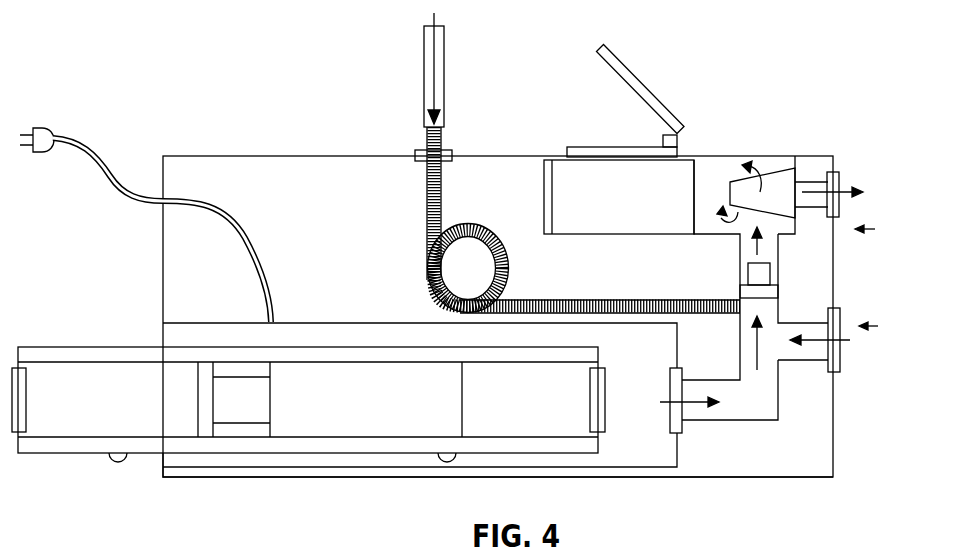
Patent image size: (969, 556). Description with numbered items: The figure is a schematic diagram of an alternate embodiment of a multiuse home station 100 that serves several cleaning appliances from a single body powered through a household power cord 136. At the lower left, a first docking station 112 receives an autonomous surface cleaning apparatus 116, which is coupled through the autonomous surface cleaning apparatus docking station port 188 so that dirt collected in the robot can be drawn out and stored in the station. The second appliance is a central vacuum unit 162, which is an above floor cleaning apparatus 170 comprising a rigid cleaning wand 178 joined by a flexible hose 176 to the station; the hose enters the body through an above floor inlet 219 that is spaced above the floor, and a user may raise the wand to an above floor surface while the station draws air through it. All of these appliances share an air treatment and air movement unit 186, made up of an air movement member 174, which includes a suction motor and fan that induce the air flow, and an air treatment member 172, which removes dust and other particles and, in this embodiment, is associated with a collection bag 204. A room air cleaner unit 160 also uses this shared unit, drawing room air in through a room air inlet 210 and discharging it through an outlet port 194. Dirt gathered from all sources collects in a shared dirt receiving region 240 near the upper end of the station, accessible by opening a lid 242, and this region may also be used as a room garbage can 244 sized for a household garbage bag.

The multiuse home station 100 is at (206, 70).
The first docking station 112 is at (124, 325).
The autonomous surface cleaning apparatus 116 is at (316, 455).
The power cord 136 is at (93, 146).
The room air cleaner unit 160 is at (893, 327).
The central vacuum unit 162 is at (362, 131).
The above floor cleaning apparatus 170 is at (462, 82).
The air treatment member 172 is at (808, 164).
The air movement member 174 is at (728, 278).
The flexible hose 176 is at (424, 93).
The rigid cleaning wand 178 is at (426, 203).
The air treatment and air movement unit 186 is at (887, 228).
The autonomous surface cleaning apparatus docking station port 188 is at (683, 426).
The exhaust port 194 is at (841, 175).
The collection bag 204 is at (540, 196).
The room air inlet 210 is at (839, 360).
The above floor inlet 219 is at (445, 161).
The shared dirt receiving region 240 is at (550, 177).
The lid 242 is at (629, 70).
The room garbage can 244 is at (583, 128).